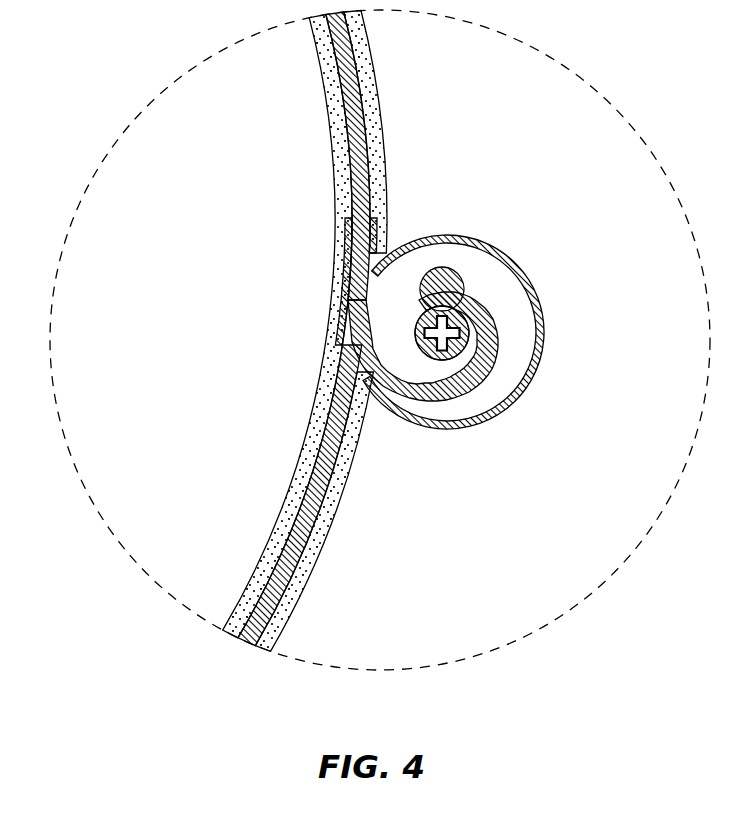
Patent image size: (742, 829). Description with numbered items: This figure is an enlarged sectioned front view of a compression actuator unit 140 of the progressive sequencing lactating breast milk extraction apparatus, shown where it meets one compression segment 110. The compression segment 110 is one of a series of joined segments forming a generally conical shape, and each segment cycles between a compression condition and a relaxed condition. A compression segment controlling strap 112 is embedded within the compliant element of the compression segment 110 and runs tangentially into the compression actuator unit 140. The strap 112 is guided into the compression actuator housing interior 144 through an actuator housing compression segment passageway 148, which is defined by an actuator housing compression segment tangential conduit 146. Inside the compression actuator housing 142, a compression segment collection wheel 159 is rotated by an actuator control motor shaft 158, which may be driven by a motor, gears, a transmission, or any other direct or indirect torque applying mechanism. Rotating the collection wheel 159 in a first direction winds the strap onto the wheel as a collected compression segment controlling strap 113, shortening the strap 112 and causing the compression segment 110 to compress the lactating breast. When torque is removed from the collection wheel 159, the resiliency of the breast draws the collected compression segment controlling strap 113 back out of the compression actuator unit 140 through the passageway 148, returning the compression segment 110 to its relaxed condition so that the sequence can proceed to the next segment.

The compression segment 110 is at (350, 88).
The compression segment controlling strap 112 is at (370, 125).
The actuator housing compression segment passageway 148 is at (343, 238).
The actuator housing compression segment tangential conduit 146 is at (383, 240).
The compression actuator housing interior 144 is at (453, 255).
The compression actuator housing 142 is at (544, 334).
The collected compression segment controlling strap 113 is at (482, 324).
The actuator control motor shaft 158 is at (418, 343).
The compression segment collection wheel 159 is at (448, 352).
The compression actuator unit 140 is at (540, 415).